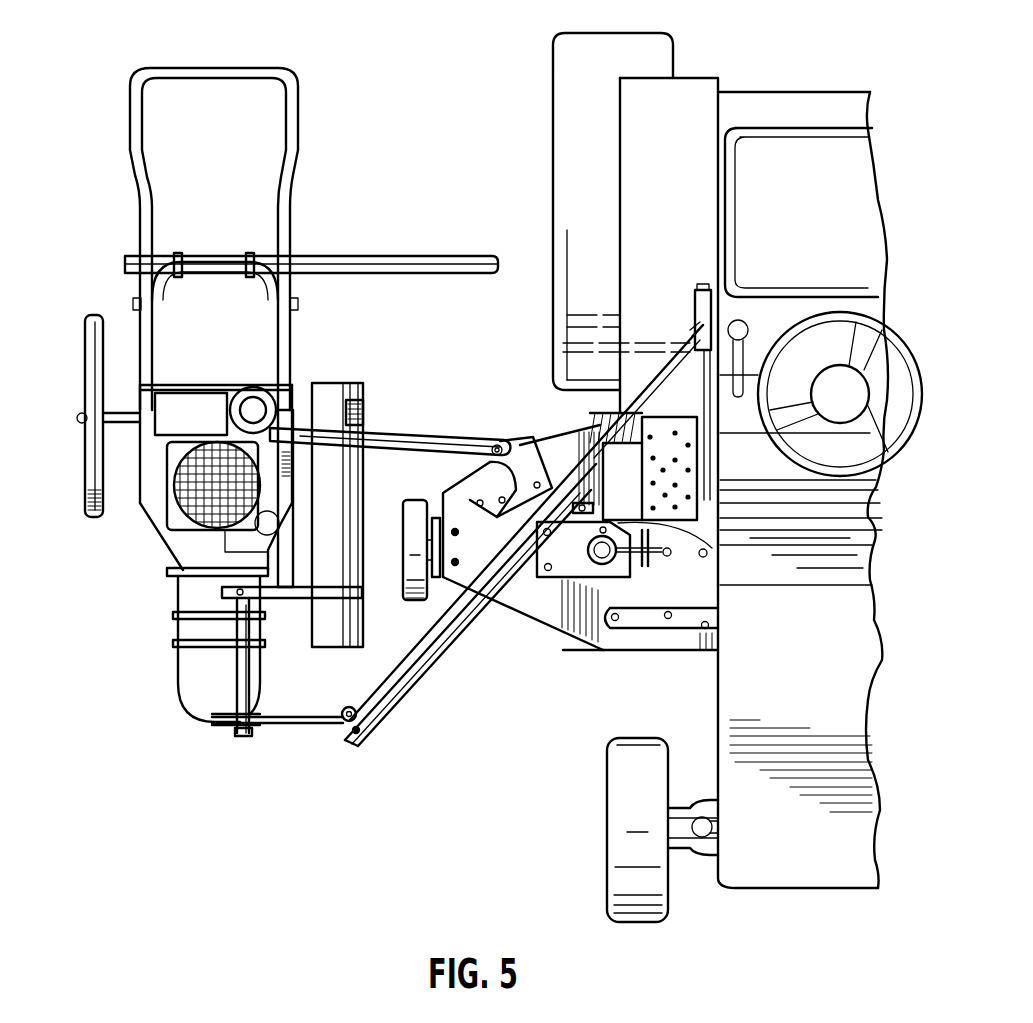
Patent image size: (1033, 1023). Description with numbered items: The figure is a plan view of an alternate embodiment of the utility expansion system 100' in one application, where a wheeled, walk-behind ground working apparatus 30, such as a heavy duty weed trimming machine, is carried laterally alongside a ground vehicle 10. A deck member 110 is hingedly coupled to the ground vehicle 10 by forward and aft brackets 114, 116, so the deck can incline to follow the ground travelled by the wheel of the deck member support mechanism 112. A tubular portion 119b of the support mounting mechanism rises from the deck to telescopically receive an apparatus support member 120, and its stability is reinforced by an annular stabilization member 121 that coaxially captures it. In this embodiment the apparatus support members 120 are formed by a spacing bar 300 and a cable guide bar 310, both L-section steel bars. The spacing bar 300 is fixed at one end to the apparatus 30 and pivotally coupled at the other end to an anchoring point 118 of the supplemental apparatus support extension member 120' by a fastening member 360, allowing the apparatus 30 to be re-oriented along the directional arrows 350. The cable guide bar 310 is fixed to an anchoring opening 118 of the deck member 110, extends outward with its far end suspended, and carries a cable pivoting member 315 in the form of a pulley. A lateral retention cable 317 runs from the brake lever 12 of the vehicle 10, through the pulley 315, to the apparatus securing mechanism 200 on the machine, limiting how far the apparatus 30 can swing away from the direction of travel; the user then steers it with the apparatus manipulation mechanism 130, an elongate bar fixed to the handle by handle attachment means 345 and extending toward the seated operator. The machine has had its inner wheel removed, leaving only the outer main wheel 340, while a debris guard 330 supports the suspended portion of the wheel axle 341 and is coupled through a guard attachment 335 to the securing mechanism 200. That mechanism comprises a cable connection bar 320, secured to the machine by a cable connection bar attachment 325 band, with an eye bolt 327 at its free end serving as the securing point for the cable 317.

The ground vehicle 10 is at (803, 106).
The brake lever 12 is at (700, 307).
The ground working apparatus 30 is at (160, 520).
The utility expansion system 100' is at (660, 779).
The deck member 110 is at (610, 640).
The deck member support mechanism 112 is at (418, 602).
The forward bracket 114 is at (683, 623).
The aft bracket 116 is at (640, 435).
The anchoring opening 118 is at (533, 470).
The tubular portion 119b is at (566, 640).
The apparatus support member 120 is at (523, 518).
The supplemental apparatus support extension member 120' is at (467, 489).
The annular stabilization member 121 is at (705, 553).
The apparatus manipulation mechanism 130 is at (445, 274).
The apparatus securing mechanism 200 is at (172, 640).
The spacing bar 300 is at (465, 433).
The cable guide bar 310 is at (453, 643).
The cable pivoting member 315 is at (368, 722).
The lateral retention cable 317 is at (308, 737).
The cable connection bar 320 is at (240, 700).
The cable connection bar attachment 325 is at (258, 625).
The eye bolt 327 is at (260, 728).
The debris guard 330 is at (392, 452).
The guard attachment 335 is at (208, 642).
The outer main wheel 340 is at (88, 355).
The wheel axle 341 is at (300, 392).
The handle attachment means 345 is at (248, 255).
The directional arrows 350 is at (418, 428).
The fastening member 360 is at (513, 517).